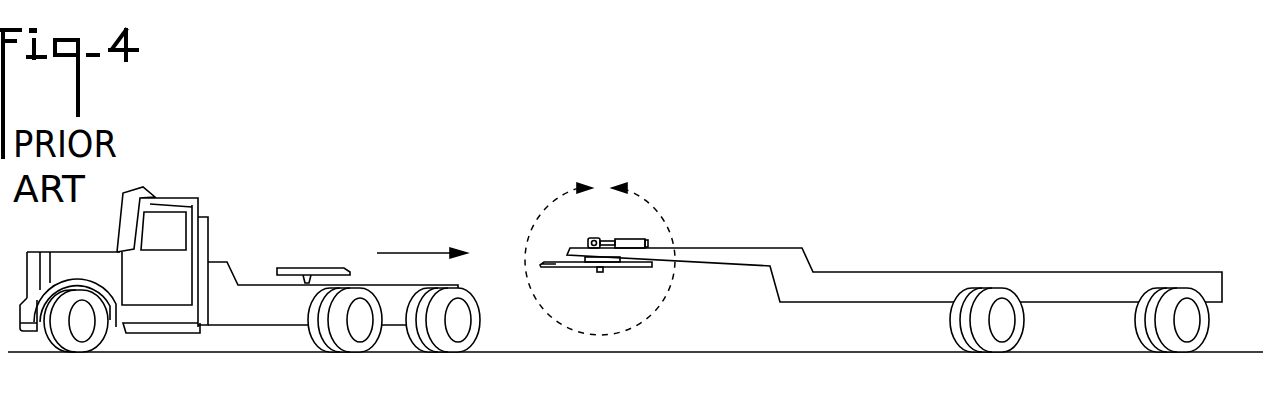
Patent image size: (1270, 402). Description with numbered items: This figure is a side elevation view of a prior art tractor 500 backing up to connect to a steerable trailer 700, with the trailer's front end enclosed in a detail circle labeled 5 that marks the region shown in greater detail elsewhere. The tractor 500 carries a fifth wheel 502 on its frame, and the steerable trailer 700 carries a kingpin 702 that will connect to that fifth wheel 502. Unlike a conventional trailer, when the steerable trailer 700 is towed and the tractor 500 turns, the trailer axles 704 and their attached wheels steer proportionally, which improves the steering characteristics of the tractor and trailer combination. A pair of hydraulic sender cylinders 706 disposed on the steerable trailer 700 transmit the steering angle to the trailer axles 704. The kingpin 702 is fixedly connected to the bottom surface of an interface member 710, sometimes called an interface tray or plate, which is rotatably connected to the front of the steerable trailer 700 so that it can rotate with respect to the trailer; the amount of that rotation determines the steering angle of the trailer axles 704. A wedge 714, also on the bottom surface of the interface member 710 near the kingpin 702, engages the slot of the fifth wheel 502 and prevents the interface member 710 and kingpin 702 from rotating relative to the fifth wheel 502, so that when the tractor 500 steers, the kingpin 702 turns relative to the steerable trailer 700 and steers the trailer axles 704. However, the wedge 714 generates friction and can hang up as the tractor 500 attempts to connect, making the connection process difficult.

The tractor 500 is at (240, 216).
The fifth wheel 502 is at (304, 275).
The steerable trailer 700 is at (858, 208).
The kingpin 702 is at (603, 273).
The trailer axles 704 is at (1005, 282).
The hydraulic sender cylinders 706 is at (633, 242).
The interface member 710 is at (542, 262).
The wedge 714 is at (608, 267).
The detail view circle (FIG. 5) 5 is at (600, 252).